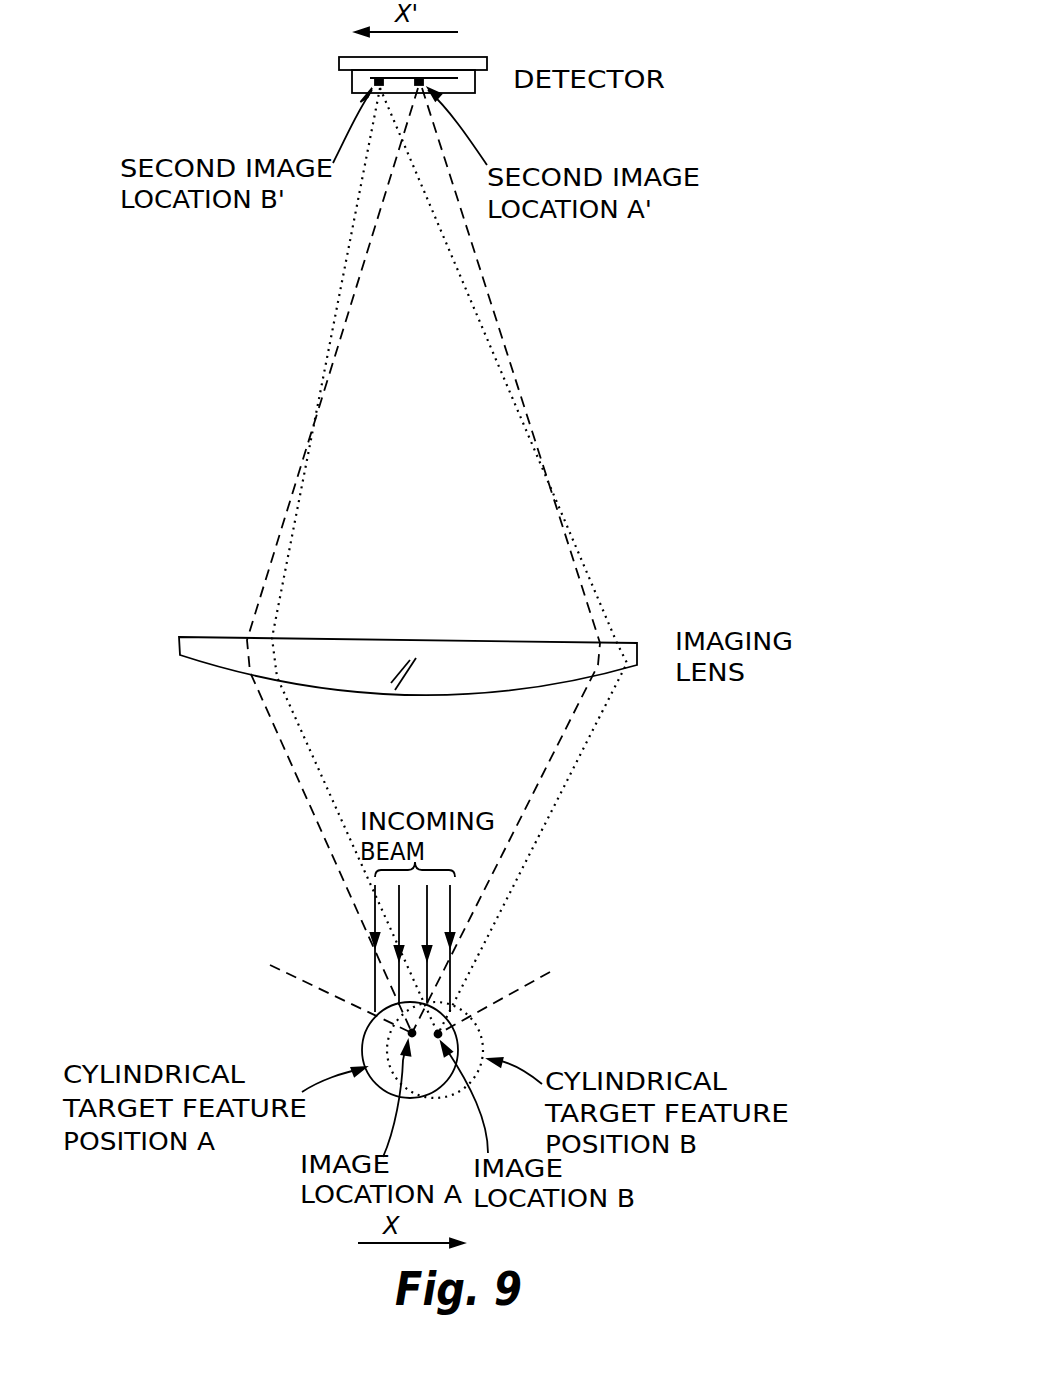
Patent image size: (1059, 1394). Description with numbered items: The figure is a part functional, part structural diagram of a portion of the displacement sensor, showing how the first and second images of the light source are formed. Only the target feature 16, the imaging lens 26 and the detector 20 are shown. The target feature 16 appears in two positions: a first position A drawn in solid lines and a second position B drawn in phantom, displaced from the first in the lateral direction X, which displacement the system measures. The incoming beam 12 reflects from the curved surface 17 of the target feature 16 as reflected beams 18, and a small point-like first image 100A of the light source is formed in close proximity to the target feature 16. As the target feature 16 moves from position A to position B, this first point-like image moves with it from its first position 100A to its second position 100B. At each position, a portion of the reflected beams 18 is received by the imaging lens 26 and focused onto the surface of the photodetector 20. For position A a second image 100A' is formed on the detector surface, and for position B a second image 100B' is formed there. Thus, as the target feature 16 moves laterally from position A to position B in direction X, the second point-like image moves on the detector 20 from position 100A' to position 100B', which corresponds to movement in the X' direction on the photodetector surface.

The detector 20 is at (476, 78).
The second image at position B 100B' is at (323, 97).
The second image at position A 100A' is at (477, 101).
The imaging lens 26 is at (641, 655).
The reflected beams 18 is at (517, 830).
The incoming beam 12 is at (415, 862).
The curved surface 17 is at (383, 1013).
The target feature 16 is at (374, 1020).
The first image at position A 100A is at (334, 1042).
The first image at position B 100B is at (502, 1023).